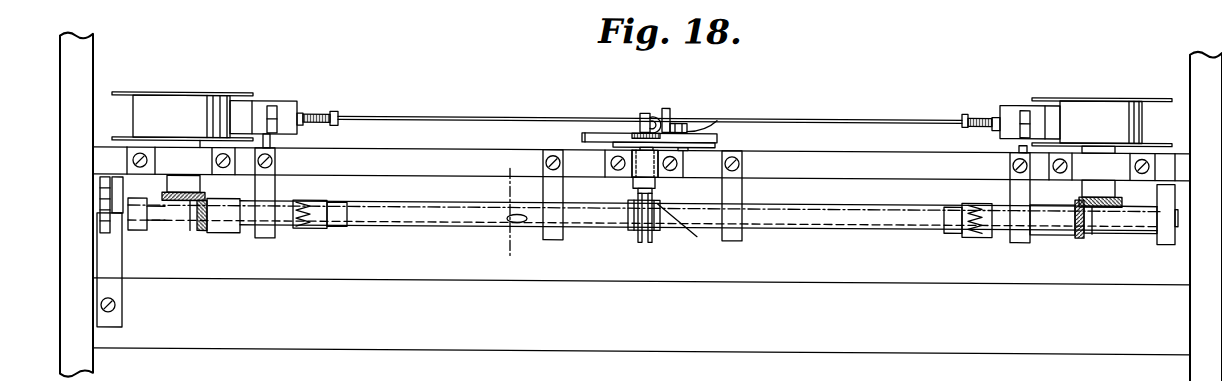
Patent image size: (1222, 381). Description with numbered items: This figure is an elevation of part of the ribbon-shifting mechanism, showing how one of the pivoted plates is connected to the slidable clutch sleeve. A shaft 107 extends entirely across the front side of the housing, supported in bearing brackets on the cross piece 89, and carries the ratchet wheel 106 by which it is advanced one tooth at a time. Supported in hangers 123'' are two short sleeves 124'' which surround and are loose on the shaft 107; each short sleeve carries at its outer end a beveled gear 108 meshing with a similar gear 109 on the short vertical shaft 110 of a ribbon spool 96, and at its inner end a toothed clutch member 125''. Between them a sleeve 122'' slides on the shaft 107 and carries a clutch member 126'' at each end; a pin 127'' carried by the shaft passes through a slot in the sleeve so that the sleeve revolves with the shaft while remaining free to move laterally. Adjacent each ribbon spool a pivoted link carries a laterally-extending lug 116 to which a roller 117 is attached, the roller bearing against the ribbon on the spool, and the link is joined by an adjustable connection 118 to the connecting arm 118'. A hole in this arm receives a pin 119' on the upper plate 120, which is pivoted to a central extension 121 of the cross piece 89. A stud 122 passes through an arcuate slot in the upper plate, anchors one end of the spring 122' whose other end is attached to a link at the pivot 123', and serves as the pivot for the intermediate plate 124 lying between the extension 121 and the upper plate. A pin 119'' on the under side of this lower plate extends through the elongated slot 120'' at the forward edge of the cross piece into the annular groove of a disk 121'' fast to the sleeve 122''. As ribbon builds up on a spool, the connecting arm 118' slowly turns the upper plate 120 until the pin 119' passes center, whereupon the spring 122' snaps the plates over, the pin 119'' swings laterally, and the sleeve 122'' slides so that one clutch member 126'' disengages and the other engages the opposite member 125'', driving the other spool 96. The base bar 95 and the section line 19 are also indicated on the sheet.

The section line 19 is at (507, 214).
The cross piece 89 is at (420, 157).
The base bar 95 is at (180, 347).
The ribbon spool 96 is at (188, 94).
The ratchet wheel 106 is at (103, 204).
The shaft 107 is at (160, 224).
The beveled gear 108 is at (210, 234).
The gear 109 is at (190, 202).
The short vertical shaft 110 is at (197, 181).
The lug 116 is at (270, 101).
The roller 117 is at (248, 116).
The adjustable connection 118 is at (474, 96).
The connecting arm 118' is at (749, 104).
The pin 119' is at (694, 101).
The pin 119'' is at (695, 231).
The upper plate 120 is at (702, 137).
The elongated slot 120'' is at (676, 175).
The central extension 121 is at (615, 174).
The disk 121'' is at (657, 232).
The stud 122 is at (660, 100).
The spring 122' is at (618, 109).
The sleeve 122'' is at (612, 236).
The pivot 123' is at (719, 110).
The hanger 123'' is at (642, 206).
The intermediate plate 124 is at (624, 138).
The short sleeve 124'' is at (644, 254).
The toothed clutch member 125'' is at (658, 223).
The clutch member 126'' is at (645, 223).
The pin 127'' is at (484, 246).